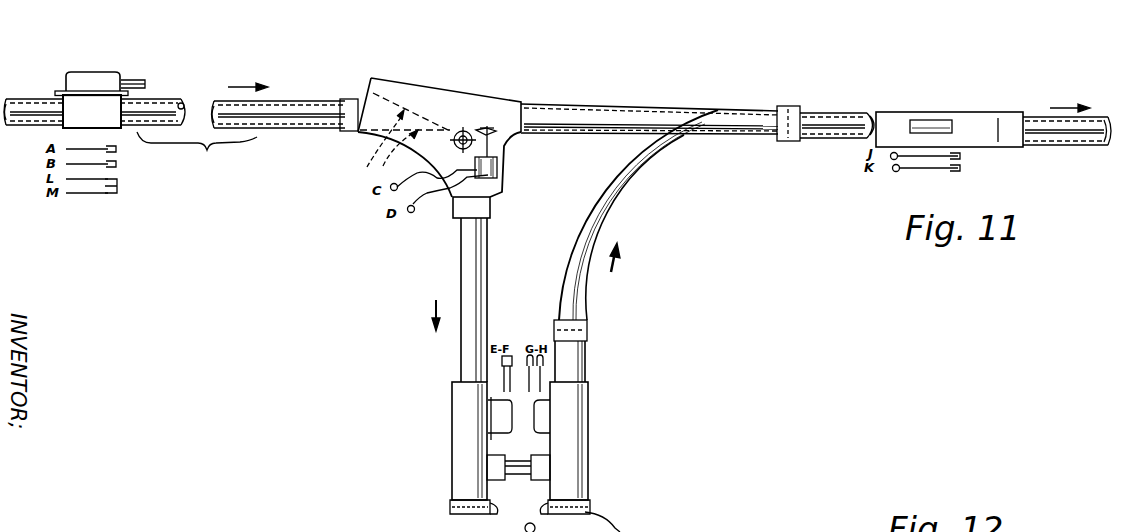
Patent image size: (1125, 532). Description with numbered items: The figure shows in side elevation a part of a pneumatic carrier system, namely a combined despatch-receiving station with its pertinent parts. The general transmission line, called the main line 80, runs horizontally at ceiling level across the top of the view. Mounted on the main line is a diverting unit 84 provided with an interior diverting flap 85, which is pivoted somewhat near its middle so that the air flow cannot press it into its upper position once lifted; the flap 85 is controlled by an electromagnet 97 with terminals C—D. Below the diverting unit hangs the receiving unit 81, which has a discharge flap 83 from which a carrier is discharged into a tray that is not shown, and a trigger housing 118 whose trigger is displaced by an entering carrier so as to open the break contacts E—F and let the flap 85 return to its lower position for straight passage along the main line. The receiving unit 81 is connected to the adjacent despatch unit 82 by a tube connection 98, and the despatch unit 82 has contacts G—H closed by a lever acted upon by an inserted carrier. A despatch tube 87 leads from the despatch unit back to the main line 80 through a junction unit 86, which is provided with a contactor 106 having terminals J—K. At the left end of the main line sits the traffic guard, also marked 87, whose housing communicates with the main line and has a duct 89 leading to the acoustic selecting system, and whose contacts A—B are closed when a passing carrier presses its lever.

The main line 80 is at (600, 114).
The receiving unit 81 is at (462, 461).
The despatch unit 82 is at (590, 410).
The discharge flap 83 is at (455, 508).
The diverting unit 84 is at (383, 88).
The diverting flap 85 is at (380, 145).
The junction unit 86 is at (984, 118).
The despatch tube 87 is at (90, 82).
The duct 89 is at (140, 80).
The electromagnet 97 is at (497, 170).
The tube connection 98 is at (608, 218).
The contactor 106 is at (932, 125).
The trigger housing 118 is at (498, 417).